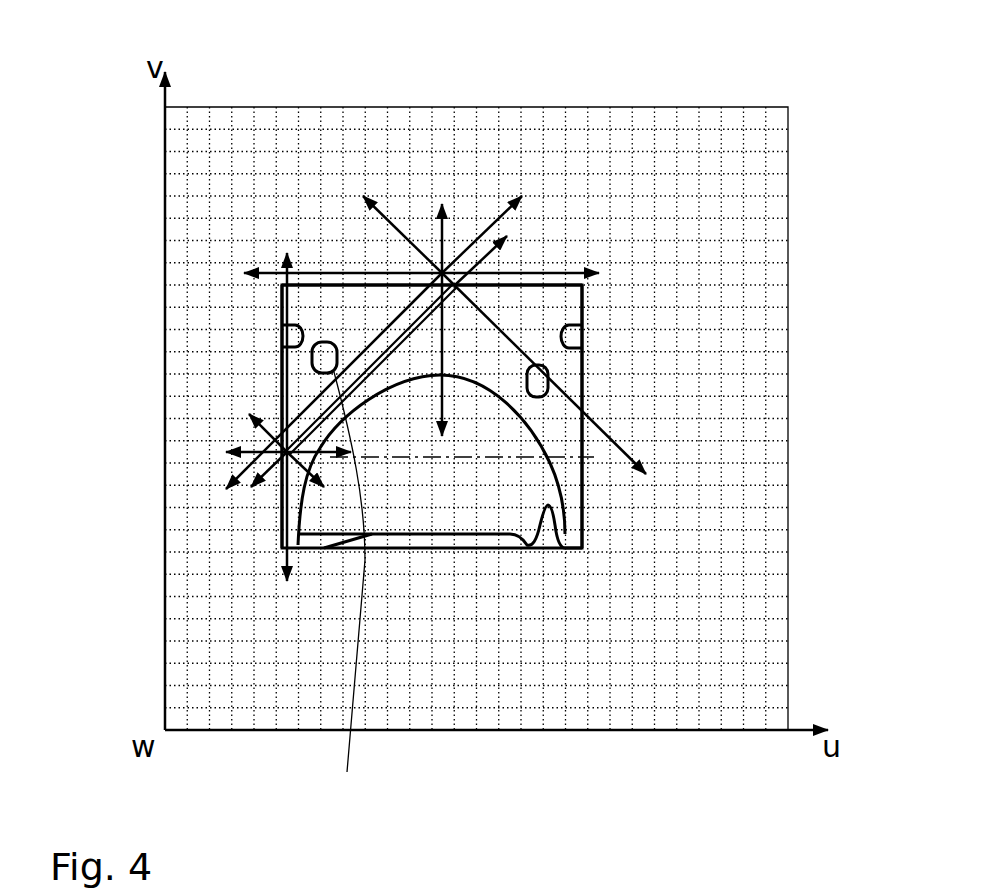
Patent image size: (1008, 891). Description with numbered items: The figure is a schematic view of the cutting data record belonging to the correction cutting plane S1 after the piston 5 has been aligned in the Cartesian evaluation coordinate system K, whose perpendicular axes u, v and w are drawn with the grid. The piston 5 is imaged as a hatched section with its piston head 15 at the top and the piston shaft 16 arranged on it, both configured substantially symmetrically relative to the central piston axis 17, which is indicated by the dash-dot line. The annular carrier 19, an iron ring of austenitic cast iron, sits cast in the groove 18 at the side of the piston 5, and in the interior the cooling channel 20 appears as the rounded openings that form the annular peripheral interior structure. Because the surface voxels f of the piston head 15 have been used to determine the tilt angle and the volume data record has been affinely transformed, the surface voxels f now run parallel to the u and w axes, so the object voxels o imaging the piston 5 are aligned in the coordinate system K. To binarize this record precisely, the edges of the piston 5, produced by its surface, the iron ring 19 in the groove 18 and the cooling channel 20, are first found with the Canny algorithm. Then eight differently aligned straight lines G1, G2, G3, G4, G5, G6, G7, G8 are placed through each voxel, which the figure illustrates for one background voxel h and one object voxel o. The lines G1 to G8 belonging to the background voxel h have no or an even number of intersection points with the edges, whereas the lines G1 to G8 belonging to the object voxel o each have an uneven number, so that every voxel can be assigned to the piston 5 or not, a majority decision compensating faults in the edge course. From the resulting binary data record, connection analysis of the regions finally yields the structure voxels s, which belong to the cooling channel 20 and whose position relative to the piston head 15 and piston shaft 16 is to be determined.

The piston 5 is at (590, 498).
The piston head 15 is at (580, 283).
The piston shaft 16 is at (283, 300).
The central piston axis 17 is at (432, 541).
The groove 18 is at (283, 308).
The annular carrier 19 is at (283, 335).
The cooling channel 20 is at (312, 360).
The correction cutting plane S1 is at (521, 275).
The evaluation coordinate system K is at (378, 736).
The surface voxels f is at (333, 296).
The background voxel h is at (446, 200).
The object voxel o is at (280, 522).
The structure voxels s is at (349, 595).
The straight line G1 is at (263, 270).
The straight line G2 is at (372, 206).
The straight line G3 is at (290, 268).
The straight line G4 is at (494, 250).
The straight line G5 is at (578, 270).
The straight line G6 is at (626, 447).
The straight line G7 is at (278, 562).
The straight line G8 is at (238, 475).